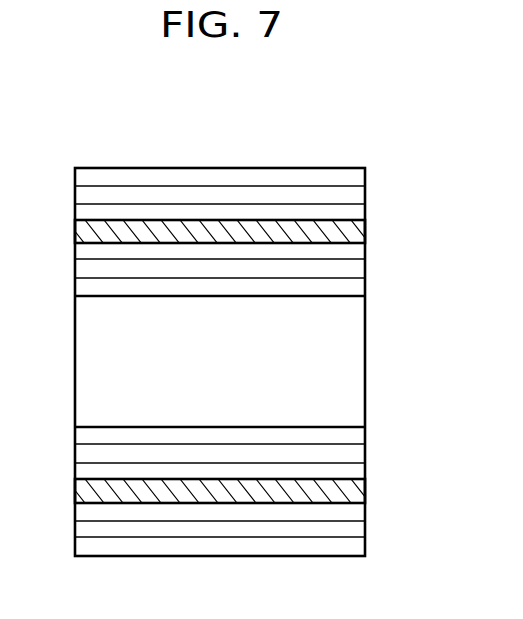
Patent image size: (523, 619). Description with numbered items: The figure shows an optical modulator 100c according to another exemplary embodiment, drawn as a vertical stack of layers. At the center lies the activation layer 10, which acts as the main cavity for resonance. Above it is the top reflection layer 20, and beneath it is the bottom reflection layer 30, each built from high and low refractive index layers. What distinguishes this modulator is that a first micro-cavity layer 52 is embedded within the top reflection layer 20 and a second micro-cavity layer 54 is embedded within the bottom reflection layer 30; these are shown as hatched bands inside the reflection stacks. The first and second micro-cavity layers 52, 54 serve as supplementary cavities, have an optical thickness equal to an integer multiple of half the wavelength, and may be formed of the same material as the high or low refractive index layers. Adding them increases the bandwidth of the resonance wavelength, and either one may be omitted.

The optical modulator 100c is at (370, 122).
The activation layer 10 is at (67, 296).
The top reflection layer 20 is at (67, 168).
The bottom reflection layer 30 is at (67, 427).
The first micro-cavity layer 52 is at (360, 230).
The second micro-cavity layer 54 is at (357, 490).